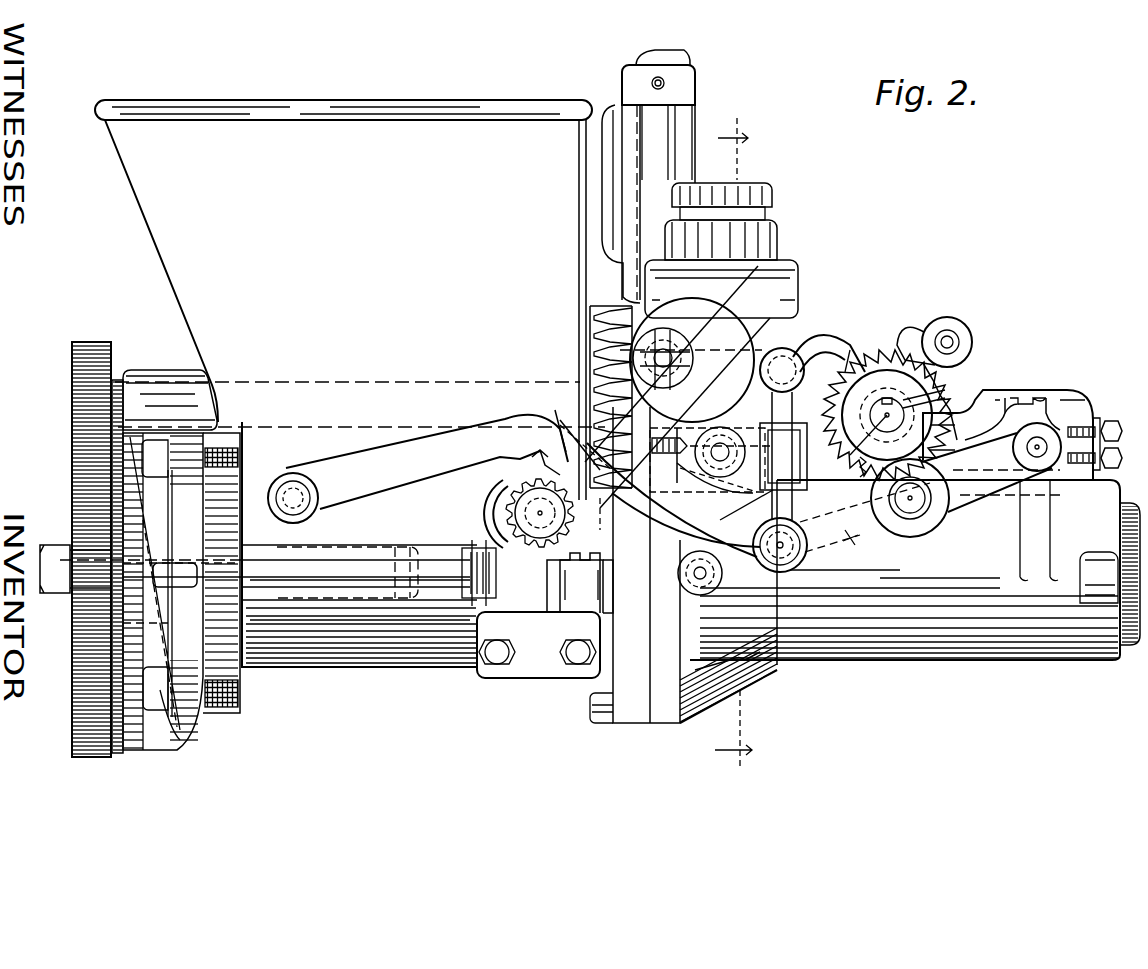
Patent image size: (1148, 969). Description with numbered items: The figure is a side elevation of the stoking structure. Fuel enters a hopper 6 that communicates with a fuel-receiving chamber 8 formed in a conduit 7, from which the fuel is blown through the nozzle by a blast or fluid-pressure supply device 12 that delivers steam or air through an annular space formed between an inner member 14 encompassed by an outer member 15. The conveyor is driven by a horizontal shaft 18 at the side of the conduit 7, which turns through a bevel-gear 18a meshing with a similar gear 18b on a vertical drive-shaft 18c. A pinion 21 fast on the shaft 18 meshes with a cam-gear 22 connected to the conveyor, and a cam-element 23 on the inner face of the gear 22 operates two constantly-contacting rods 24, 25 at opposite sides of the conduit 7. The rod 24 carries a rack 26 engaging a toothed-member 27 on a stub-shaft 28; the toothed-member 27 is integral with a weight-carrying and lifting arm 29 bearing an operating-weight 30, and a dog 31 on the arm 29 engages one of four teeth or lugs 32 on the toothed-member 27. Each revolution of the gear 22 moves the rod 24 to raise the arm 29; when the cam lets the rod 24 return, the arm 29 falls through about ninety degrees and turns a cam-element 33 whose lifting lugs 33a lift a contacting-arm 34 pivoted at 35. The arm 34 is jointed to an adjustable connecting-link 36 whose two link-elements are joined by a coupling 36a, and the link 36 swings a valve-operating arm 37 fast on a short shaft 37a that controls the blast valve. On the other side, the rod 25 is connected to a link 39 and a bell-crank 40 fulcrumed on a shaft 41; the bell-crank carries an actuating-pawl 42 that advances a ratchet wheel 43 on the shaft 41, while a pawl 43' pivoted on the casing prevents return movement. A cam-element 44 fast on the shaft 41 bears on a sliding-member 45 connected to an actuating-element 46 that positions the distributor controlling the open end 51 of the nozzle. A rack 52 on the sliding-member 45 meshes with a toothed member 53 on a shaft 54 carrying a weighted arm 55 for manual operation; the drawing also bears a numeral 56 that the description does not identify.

The hopper 6 is at (203, 101).
The conduit 7 is at (400, 665).
The fuel-receiving chamber 8 is at (970, 660).
The blast or fluid-pressure supply device 12 is at (790, 243).
The member 14 is at (720, 650).
The member 15 is at (755, 685).
The horizontal shaft 18 is at (326, 388).
The bevel-gear 18a is at (600, 335).
The gear 18b is at (603, 300).
The vertical drive-shaft 18c is at (690, 62).
The pinion 21 is at (90, 340).
The cam-gear 22 is at (78, 500).
The cam-element 23 is at (195, 740).
The rod 24 is at (256, 558).
The rod 25 is at (186, 560).
The rack 26 is at (578, 580).
The toothed-member 27 is at (590, 553).
The stub-shaft 28 is at (462, 552).
The weight-carrying and lifting arm 29 is at (748, 330).
The operating-weight 30 is at (790, 352).
The dog 31 is at (580, 445).
The teeth or lugs 32 is at (508, 490).
The cam-element 33 is at (512, 510).
The lifting lugs or cams 33a is at (543, 455).
The contacting-arm 34 is at (390, 462).
The pivot 35 is at (296, 488).
The adjustable connecting-link 36 is at (800, 540).
The coupling 36a is at (740, 525).
The valve-operating arm 37 is at (712, 365).
The short shaft 37a is at (705, 310).
The link 39 is at (852, 538).
The bell-crank 40 is at (945, 392).
The shaft 41 is at (858, 462).
The actuating-pawl 42 is at (925, 328).
The ratchet wheel 43 is at (887, 395).
The pawl 43' is at (878, 320).
The cam-element 44 is at (833, 350).
The sliding-member 45 is at (1070, 390).
The actuating-element 46 is at (1105, 420).
The open end 51 is at (562, 425).
The rack 52 is at (1012, 398).
The toothed member 53 is at (1042, 398).
The shaft 54 is at (1040, 465).
The weighted arm 55 is at (965, 505).
The sleeve 56 is at (335, 547).